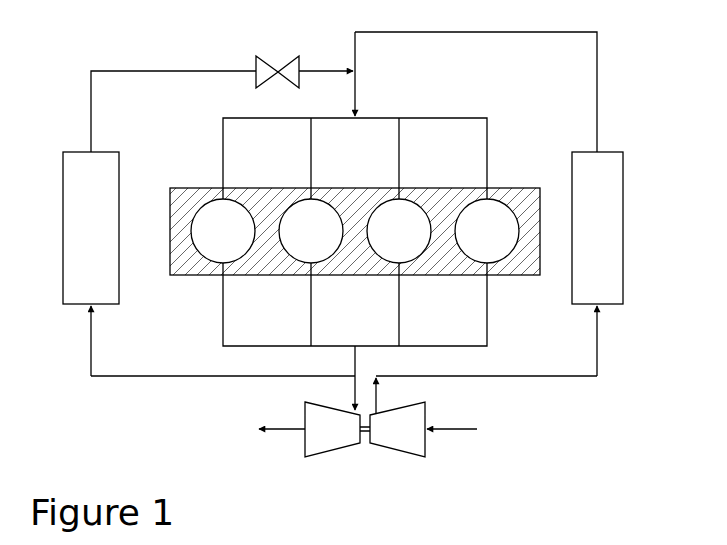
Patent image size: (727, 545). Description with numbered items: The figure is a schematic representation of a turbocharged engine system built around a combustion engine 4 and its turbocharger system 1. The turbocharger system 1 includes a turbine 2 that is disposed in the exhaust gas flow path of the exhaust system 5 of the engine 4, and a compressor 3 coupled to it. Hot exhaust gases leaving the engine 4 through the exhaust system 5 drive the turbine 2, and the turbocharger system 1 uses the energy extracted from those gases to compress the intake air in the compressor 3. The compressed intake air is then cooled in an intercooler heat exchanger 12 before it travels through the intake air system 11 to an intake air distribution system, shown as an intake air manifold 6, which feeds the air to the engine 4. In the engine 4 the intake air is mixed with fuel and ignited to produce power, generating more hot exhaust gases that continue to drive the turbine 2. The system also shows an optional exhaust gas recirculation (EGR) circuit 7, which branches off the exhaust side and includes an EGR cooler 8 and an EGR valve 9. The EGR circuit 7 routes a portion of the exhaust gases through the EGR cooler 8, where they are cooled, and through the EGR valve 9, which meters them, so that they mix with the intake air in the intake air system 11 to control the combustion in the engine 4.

The turbocharger system 1 is at (353, 470).
The turbine 2 is at (314, 436).
The compressor 3 is at (414, 444).
The engine 4 is at (202, 178).
The exhaust system 5 is at (507, 324).
The intake air manifold 6 is at (500, 132).
The exhaust gas recirculation (EGR) circuit 7 is at (85, 70).
The EGR cooler 8 is at (78, 231).
The EGR valve 9 is at (268, 72).
The intake air system 11 is at (611, 105).
The intercooler heat exchanger 12 is at (605, 243).